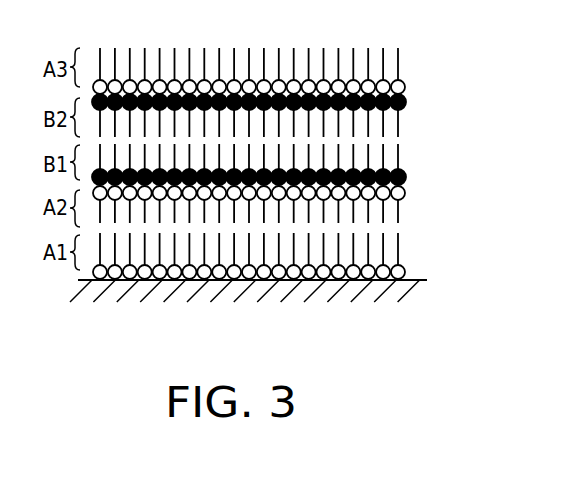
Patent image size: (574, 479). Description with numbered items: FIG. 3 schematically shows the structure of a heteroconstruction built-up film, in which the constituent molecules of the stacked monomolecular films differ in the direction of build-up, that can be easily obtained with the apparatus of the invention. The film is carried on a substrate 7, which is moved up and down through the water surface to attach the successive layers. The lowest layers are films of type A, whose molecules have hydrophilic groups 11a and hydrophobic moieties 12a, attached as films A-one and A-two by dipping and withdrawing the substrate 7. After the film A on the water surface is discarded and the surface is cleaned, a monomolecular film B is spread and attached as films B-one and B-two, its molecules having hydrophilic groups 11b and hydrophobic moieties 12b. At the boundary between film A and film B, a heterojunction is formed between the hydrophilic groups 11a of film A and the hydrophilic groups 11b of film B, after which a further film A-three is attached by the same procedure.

The hydrophobic moiety of film B molecules 12b is at (398, 160).
The hydrophilic groups of film B 11b is at (404, 180).
The hydrophilic groups of film A 11a is at (403, 199).
The hydrophobic moiety of film A molecules 12a is at (397, 217).
The substrate 7 is at (320, 298).